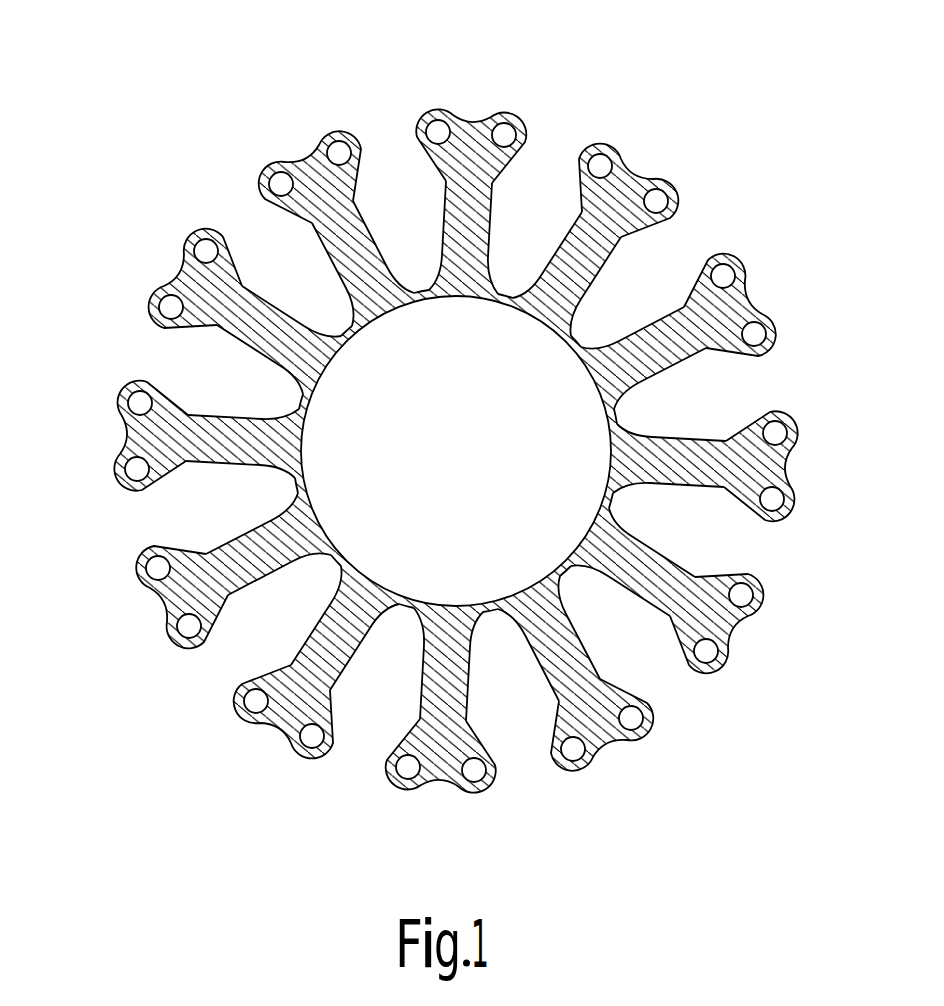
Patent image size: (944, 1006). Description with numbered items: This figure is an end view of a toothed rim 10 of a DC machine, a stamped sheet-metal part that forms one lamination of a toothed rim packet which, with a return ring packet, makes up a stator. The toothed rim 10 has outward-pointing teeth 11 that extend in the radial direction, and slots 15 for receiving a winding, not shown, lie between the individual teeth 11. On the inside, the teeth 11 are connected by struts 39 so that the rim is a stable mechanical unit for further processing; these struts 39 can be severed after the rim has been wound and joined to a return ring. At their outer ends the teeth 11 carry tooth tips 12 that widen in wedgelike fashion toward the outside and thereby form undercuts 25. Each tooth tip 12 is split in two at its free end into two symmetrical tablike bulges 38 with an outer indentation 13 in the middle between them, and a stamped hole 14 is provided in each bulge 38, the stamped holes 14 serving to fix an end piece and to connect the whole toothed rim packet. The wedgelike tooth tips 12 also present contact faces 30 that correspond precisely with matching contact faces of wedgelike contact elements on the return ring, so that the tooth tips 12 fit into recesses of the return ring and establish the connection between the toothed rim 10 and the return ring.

The toothed rim 10 is at (206, 158).
The teeth 11 is at (663, 343).
The tooth tips 12 is at (140, 438).
The outer indentation 13 is at (302, 157).
The stamped hole 14 is at (722, 276).
The slots 15 is at (397, 203).
The undercuts 25 is at (214, 551).
The contact faces 30 is at (712, 492).
The tablike bulges 38 is at (620, 686).
The struts 39 is at (345, 335).